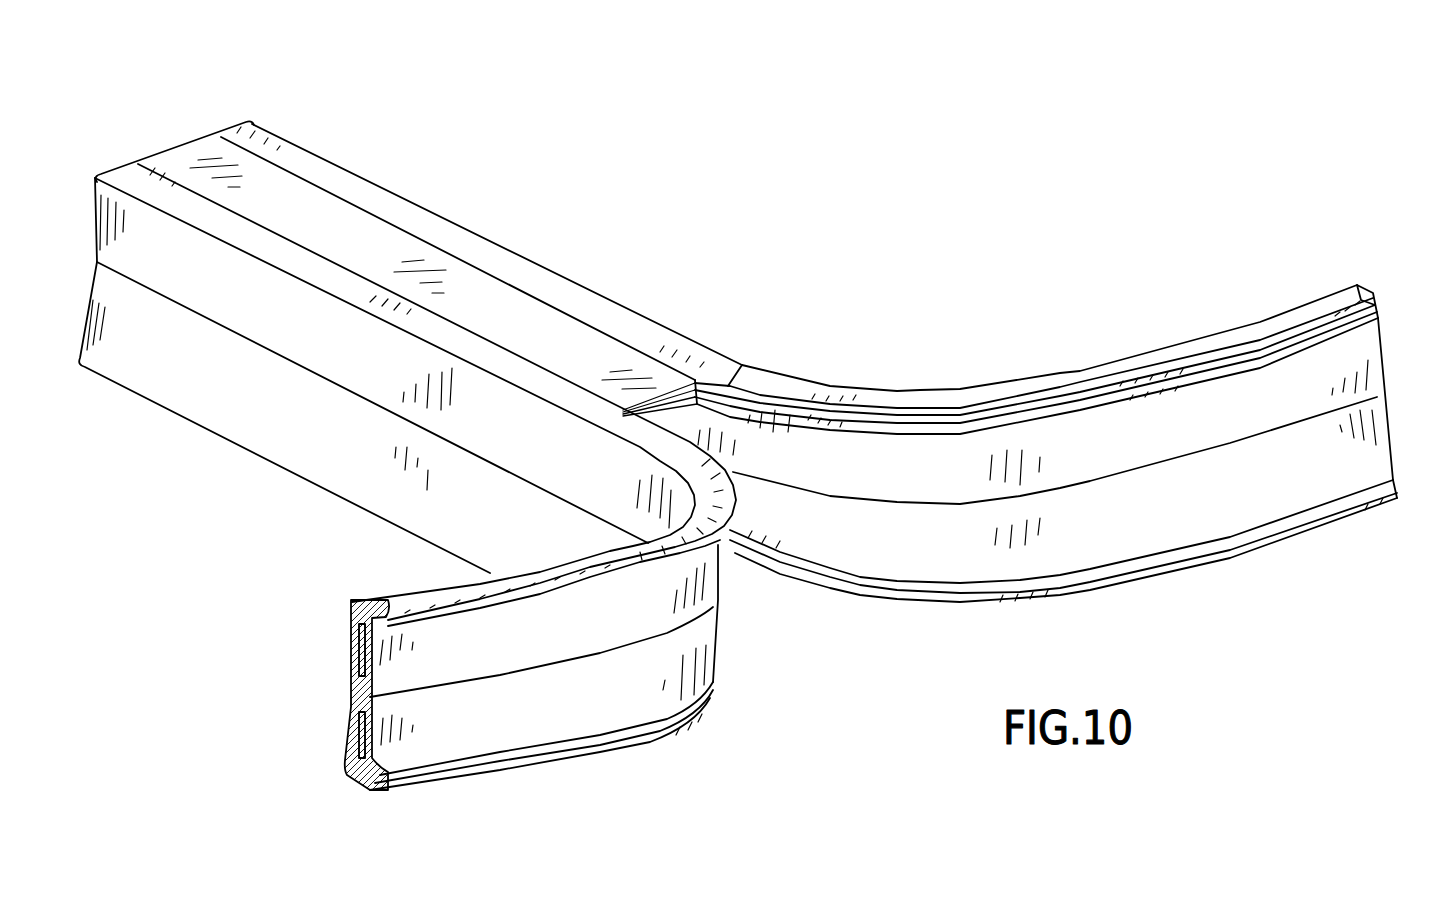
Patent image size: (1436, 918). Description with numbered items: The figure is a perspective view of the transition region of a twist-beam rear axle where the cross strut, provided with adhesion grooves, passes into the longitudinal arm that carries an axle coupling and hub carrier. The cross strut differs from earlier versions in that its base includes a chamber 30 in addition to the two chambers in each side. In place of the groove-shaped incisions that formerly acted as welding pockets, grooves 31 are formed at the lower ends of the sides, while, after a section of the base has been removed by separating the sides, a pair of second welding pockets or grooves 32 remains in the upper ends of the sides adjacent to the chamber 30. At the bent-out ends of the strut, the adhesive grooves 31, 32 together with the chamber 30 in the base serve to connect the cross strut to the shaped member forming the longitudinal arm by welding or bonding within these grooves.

The chamber 30 is at (740, 365).
The second welding pockets or grooves 32 is at (387, 610).
The grooves 31 is at (402, 775).